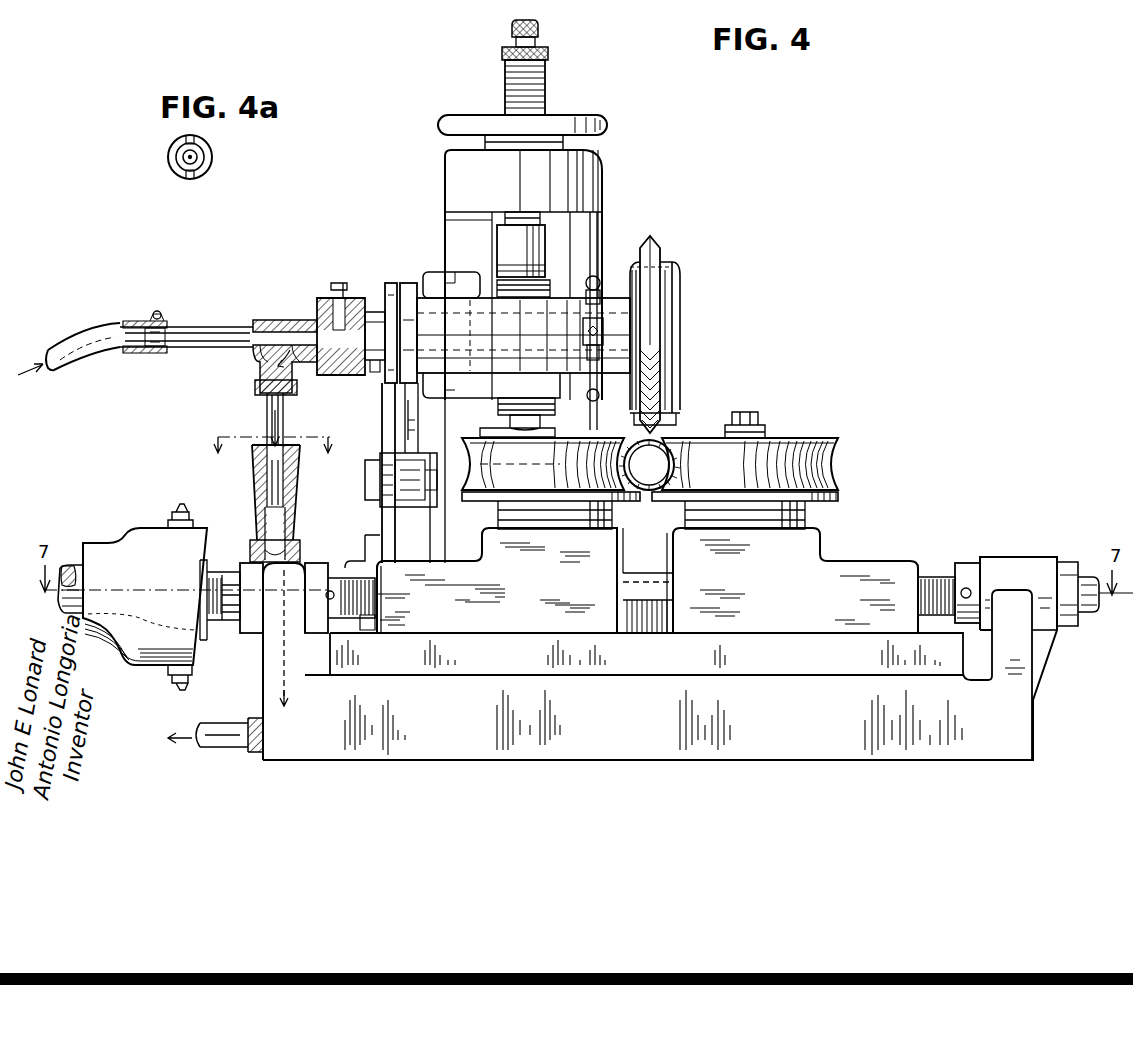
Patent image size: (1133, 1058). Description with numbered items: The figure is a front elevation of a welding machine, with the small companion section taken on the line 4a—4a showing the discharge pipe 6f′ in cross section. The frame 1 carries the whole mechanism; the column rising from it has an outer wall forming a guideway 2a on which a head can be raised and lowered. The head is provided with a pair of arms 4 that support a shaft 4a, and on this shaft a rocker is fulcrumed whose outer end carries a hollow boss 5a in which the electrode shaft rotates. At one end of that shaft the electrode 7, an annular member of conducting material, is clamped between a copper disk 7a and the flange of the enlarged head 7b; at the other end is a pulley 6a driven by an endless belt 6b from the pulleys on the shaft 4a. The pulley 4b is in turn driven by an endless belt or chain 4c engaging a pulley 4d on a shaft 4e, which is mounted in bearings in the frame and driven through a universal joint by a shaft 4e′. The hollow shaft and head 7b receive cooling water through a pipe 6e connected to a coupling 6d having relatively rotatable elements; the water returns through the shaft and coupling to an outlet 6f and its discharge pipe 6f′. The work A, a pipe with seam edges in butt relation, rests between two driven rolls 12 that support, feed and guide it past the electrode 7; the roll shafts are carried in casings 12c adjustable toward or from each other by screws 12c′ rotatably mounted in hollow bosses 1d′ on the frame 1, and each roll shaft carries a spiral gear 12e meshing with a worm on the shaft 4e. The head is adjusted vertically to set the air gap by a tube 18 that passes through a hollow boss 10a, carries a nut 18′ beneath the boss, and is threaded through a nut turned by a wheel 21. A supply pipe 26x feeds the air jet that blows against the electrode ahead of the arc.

In FIG. 4, the frame 1 is at (620, 748).
In FIG. 4, the hollow bosses 1d′ is at (1020, 573).
In FIG. 4, the guideway 2a is at (447, 238).
In FIG. 4, the arms 4 is at (455, 292).
In FIG. 4, the shaft 4a is at (271, 455).
In FIG. 4, the pulley 4b is at (382, 375).
In FIG. 4, the endless belt or chain 4c is at (385, 540).
In FIG. 4, the pulley 4d is at (398, 560).
In FIG. 4, the shaft 4e is at (208, 565).
In FIG. 4, the shaft 4e′ is at (90, 562).
In FIG. 4, the hollow boss 5a is at (491, 385).
In FIG. 4, the pulley 6a is at (435, 282).
In FIG. 4, the endless belt 6b is at (405, 290).
In FIG. 4, the coupling 6d is at (352, 298).
In FIG. 4, the pipe 6e is at (135, 330).
In FIG. 4, the outlet 6f is at (258, 370).
In FIG. 4, the discharge pipe 6f′ is at (285, 420).
In FIG. 4a, the discharge pipe 6f′ is at (212, 157).
In FIG. 4, the electrode 7 is at (660, 252).
In FIG. 4, the copper disk 7a is at (675, 286).
In FIG. 4, the enlarged head 7b is at (638, 322).
In FIG. 4, the hollow boss 10a is at (507, 243).
In FIG. 4, the driven rolls 12 is at (492, 478).
In FIG. 4, the casings 12c is at (510, 628).
In FIG. 4, the screw 12c′ is at (348, 618).
In FIG. 4, the spiral gear 12e is at (415, 433).
In FIG. 4, the tube 18 is at (545, 90).
In FIG. 4, the nut 18′ is at (545, 260).
In FIG. 4, the wheel 21 is at (606, 123).
In FIG. 4, the supply pipe 26x is at (590, 305).
In FIG. 4, the work A is at (659, 465).